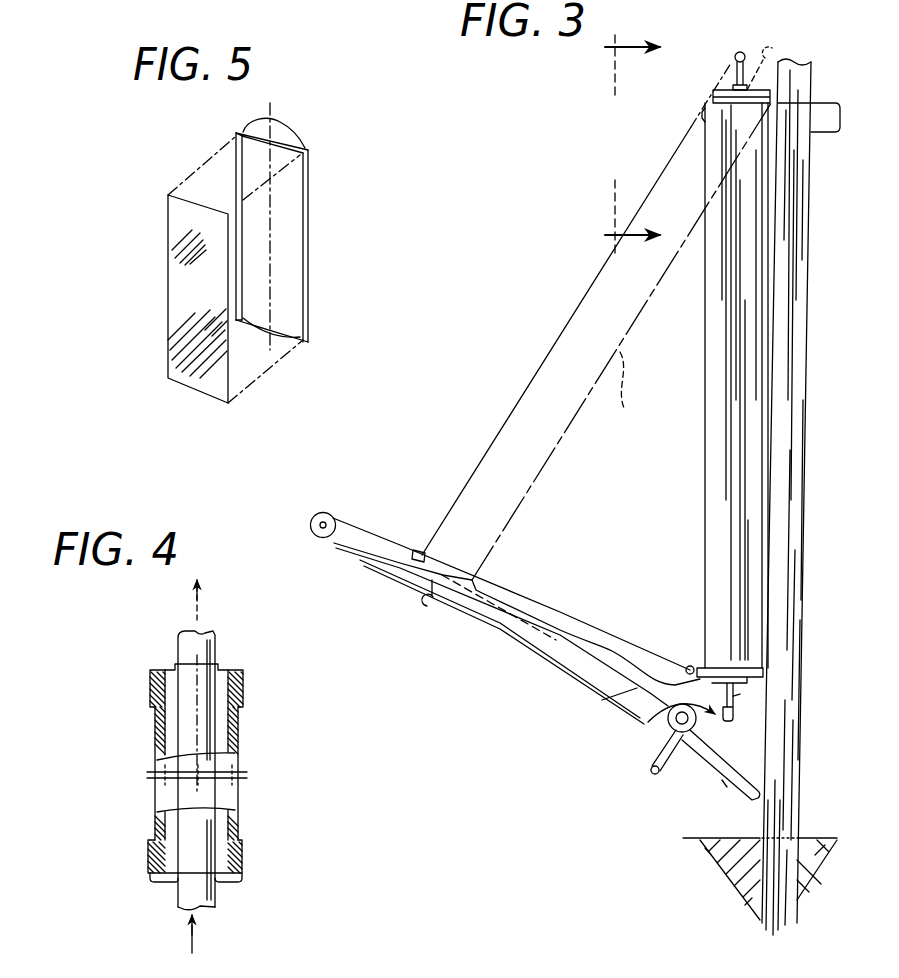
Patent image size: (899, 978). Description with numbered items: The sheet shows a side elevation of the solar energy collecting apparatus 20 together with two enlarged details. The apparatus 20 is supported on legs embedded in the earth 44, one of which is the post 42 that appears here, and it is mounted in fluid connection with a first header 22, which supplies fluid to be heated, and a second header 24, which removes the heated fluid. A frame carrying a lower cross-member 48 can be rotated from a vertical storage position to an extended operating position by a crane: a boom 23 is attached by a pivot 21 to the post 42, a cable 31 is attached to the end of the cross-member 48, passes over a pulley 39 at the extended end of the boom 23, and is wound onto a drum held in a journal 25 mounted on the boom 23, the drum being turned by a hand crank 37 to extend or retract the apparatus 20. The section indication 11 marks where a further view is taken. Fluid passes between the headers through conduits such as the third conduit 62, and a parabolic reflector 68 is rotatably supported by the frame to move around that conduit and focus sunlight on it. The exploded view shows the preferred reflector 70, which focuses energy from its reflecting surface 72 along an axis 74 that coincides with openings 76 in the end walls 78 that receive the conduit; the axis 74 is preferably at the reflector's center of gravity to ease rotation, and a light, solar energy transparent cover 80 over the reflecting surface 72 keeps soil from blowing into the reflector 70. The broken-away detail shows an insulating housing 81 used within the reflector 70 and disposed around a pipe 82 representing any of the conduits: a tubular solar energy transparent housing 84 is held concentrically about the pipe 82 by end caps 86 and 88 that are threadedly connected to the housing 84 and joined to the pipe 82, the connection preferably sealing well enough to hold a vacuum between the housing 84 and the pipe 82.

In FIG. 3, the section line 11 is at (623, 146).
In FIG. 3, the solar energy collecting apparatus 20 is at (664, 114).
In FIG. 3, the pivot 21 is at (755, 822).
In FIG. 3, the first header 22 is at (641, 710).
In FIG. 3, the boom 23 is at (598, 697).
In FIG. 3, the second header 24 is at (736, 50).
In FIG. 3, the journal 25 is at (699, 733).
In FIG. 3, the cable 31 is at (602, 700).
In FIG. 3, the hand crank 37 is at (657, 775).
In FIG. 3, the pulley 39 is at (326, 510).
In FIG. 3, the leg (post) 42 is at (797, 740).
In FIG. 3, the earth 44 is at (698, 836).
In FIG. 3, the second or lower cross-member 48 is at (592, 361).
In FIG. 3, the third conduit 62 is at (735, 695).
In FIG. 3, the parabolic reflector 68 is at (705, 385).
In FIG. 5, the reflector 70 is at (320, 138).
In FIG. 5, the reflecting surface 72 is at (294, 207).
In FIG. 5, the axis 74 is at (272, 233).
In FIG. 5, the opening 76 is at (272, 134).
In FIG. 5, the end wall 78 is at (253, 128).
In FIG. 5, the solar energy transparent cover 80 is at (213, 388).
In FIG. 4, the insulating housing 81 is at (139, 746).
In FIG. 4, the pipe or conduit 82 is at (216, 644).
In FIG. 4, the tubular solar energy transparent housing 84 is at (157, 820).
In FIG. 4, the end cap 86 is at (153, 882).
In FIG. 4, the end cap 88 is at (160, 669).